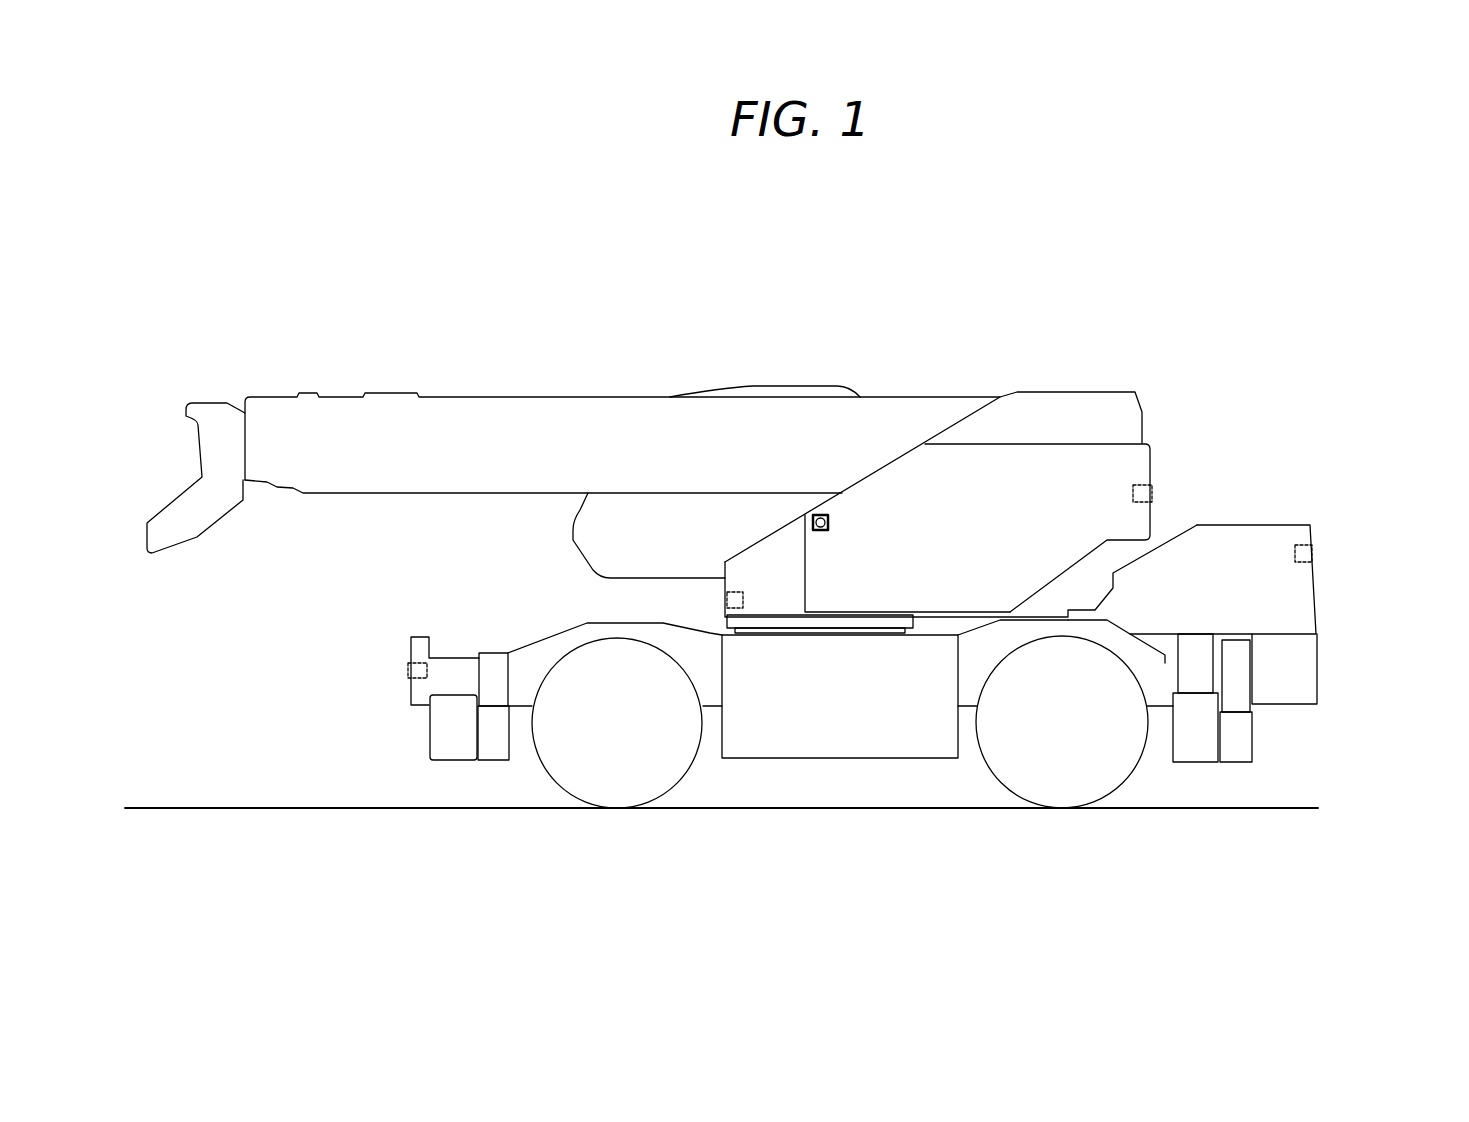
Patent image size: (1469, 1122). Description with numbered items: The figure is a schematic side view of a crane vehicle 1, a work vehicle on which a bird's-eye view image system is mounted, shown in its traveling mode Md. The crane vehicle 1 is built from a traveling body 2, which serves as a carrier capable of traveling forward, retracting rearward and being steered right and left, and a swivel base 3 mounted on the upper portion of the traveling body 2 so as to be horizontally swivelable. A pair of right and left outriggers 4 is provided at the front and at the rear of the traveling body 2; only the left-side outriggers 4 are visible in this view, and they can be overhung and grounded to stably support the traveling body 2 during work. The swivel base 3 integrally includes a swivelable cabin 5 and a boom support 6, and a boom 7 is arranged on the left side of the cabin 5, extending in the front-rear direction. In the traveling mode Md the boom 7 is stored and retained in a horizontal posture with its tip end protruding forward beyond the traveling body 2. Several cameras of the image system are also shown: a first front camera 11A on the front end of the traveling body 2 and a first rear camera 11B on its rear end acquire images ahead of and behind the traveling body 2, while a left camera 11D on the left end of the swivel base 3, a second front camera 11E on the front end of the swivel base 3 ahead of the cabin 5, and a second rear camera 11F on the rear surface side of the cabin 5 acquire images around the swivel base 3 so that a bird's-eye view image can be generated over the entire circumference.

The crane vehicle 1 is at (1032, 277).
The traveling mode Md is at (1108, 350).
The traveling body 2 is at (1385, 615).
The swivel base 3 is at (1152, 385).
The outrigger 4 is at (495, 742).
The cabin 5 is at (785, 377).
The boom support 6 is at (1163, 462).
The boom 7 is at (538, 390).
The first front camera 11A is at (408, 672).
The first rear camera 11B is at (1313, 553).
The left camera 11D is at (824, 512).
The second front camera 11E is at (727, 600).
The second rear camera 11F is at (1153, 492).